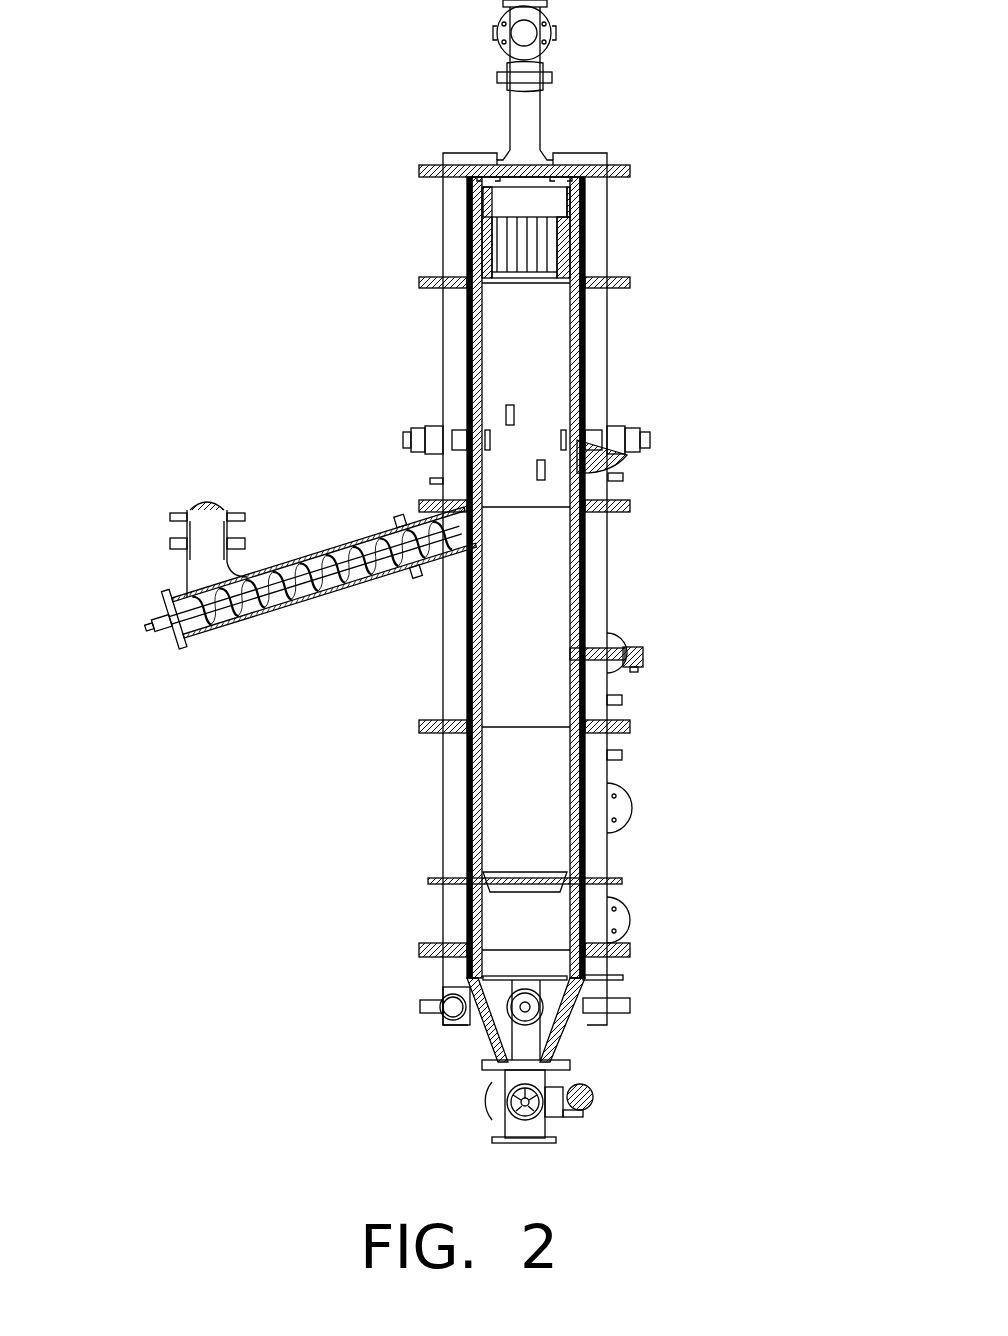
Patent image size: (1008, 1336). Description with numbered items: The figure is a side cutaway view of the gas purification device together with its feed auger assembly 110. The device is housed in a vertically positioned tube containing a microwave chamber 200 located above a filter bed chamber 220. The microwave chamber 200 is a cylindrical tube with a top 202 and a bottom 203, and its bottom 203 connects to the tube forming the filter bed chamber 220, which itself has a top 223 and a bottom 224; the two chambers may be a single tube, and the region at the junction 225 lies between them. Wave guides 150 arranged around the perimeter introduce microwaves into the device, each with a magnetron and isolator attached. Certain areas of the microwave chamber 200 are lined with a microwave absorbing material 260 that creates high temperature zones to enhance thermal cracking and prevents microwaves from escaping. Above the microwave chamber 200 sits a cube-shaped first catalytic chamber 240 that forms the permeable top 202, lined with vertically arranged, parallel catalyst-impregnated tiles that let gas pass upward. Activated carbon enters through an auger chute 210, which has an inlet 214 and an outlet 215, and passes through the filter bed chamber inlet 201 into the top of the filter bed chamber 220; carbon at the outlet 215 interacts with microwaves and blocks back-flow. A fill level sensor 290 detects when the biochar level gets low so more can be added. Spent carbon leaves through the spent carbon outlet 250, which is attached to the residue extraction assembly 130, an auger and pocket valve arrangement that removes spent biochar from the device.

The feed auger assembly 110 is at (447, 576).
The residue extraction assembly 130 is at (532, 1104).
The wave guides 150 is at (622, 440).
The microwave chamber 200 is at (417, 283).
The filter bed chamber inlet 201 is at (475, 533).
The top of the microwave chamber 202 is at (525, 283).
The bottom of the microwave chamber 203 is at (627, 481).
The top of the filter bed chamber 223 is at (633, 503).
The auger chute 210 is at (314, 600).
The inlet of the auger chute 214 is at (186, 575).
The outlet of the auger chute 215 is at (485, 538).
The filter bed chamber 220 is at (633, 507).
The bottom of the filter bed chamber 224 is at (512, 985).
The transition section 225 is at (610, 556).
The first catalytic chamber 240 is at (547, 234).
The spent carbon outlet 250 is at (494, 1050).
The microwave absorbing material 260 is at (472, 811).
The fill level sensor 290 is at (647, 658).